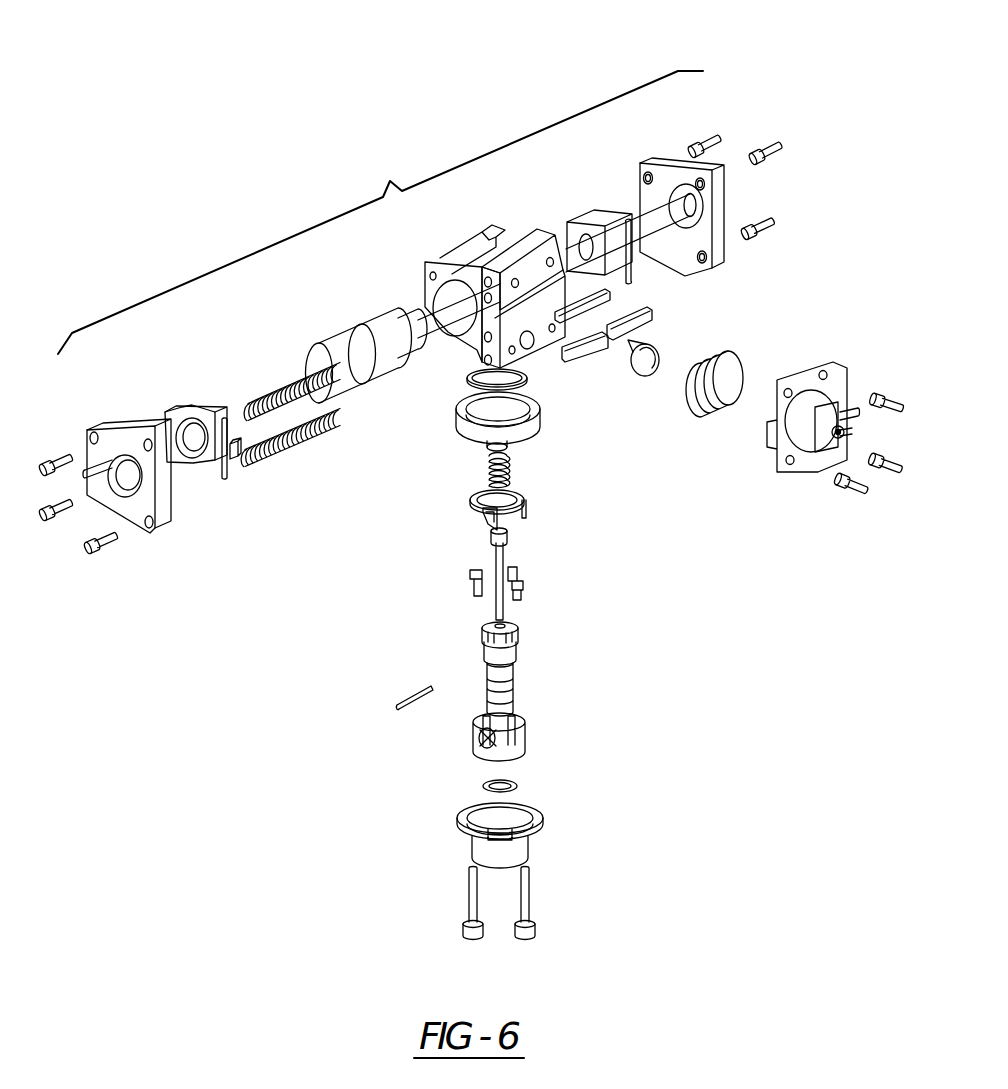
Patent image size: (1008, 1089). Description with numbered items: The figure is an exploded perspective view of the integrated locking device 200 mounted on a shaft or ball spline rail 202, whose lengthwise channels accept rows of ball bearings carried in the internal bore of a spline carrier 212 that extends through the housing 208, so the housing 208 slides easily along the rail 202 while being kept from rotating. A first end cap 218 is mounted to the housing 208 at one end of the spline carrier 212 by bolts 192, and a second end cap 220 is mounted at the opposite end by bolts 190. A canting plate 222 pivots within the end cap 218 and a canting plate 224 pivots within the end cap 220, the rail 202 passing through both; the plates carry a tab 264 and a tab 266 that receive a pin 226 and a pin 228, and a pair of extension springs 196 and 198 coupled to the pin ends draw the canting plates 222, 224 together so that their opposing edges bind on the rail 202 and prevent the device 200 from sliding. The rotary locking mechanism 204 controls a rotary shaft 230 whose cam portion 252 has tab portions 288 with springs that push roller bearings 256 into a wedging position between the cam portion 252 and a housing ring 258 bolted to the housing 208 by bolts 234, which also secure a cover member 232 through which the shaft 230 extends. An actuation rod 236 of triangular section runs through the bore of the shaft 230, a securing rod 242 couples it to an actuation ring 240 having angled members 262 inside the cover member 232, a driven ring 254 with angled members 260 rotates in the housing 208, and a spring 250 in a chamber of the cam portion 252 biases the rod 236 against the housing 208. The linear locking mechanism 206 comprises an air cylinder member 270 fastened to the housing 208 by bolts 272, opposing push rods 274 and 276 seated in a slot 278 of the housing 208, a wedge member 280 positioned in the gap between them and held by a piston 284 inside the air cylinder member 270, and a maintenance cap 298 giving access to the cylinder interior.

The integrated locking device 200 is at (471, 470).
The bolts 190 is at (755, 150).
The bolts 192 is at (112, 540).
The extension spring 196 is at (303, 447).
The extension spring 198 is at (280, 392).
The ball spline rail 202 is at (501, 328).
The rotary locking mechanism 204 is at (518, 654).
The linear locking mechanism 206 is at (836, 429).
The housing 208 is at (503, 240).
The spline carrier 212 is at (368, 380).
The first end cap 218 is at (125, 432).
The second end cap 220 is at (742, 218).
The canting plate 222 is at (203, 412).
The canting plate 224 is at (600, 218).
The pin 226 is at (230, 468).
The pin 228 is at (625, 218).
The rotary shaft 230 is at (520, 680).
The cover member 232 is at (541, 818).
The bolts 234 is at (527, 900).
The actuation rod 236 is at (498, 552).
The actuation ring 240 is at (516, 749).
The securing rod 242 is at (410, 685).
The spring 250 is at (490, 467).
The cam portion 252 is at (515, 612).
The driven ring 254 is at (535, 512).
The roller bearings 256 is at (523, 583).
The housing ring 258 is at (537, 418).
The angled members 260 is at (483, 520).
The angled members 262 is at (478, 733).
The tab 264 is at (237, 455).
The tab 266 is at (660, 268).
The air cylinder member 270 is at (805, 380).
The bolts 272 is at (883, 392).
The push rod 274 is at (580, 355).
The push rod 276 is at (643, 320).
The slot 278 is at (572, 303).
The wedge member 280 is at (645, 365).
The piston 284 is at (718, 398).
The tab portions 288 is at (478, 640).
The maintenance cap 298 is at (843, 432).